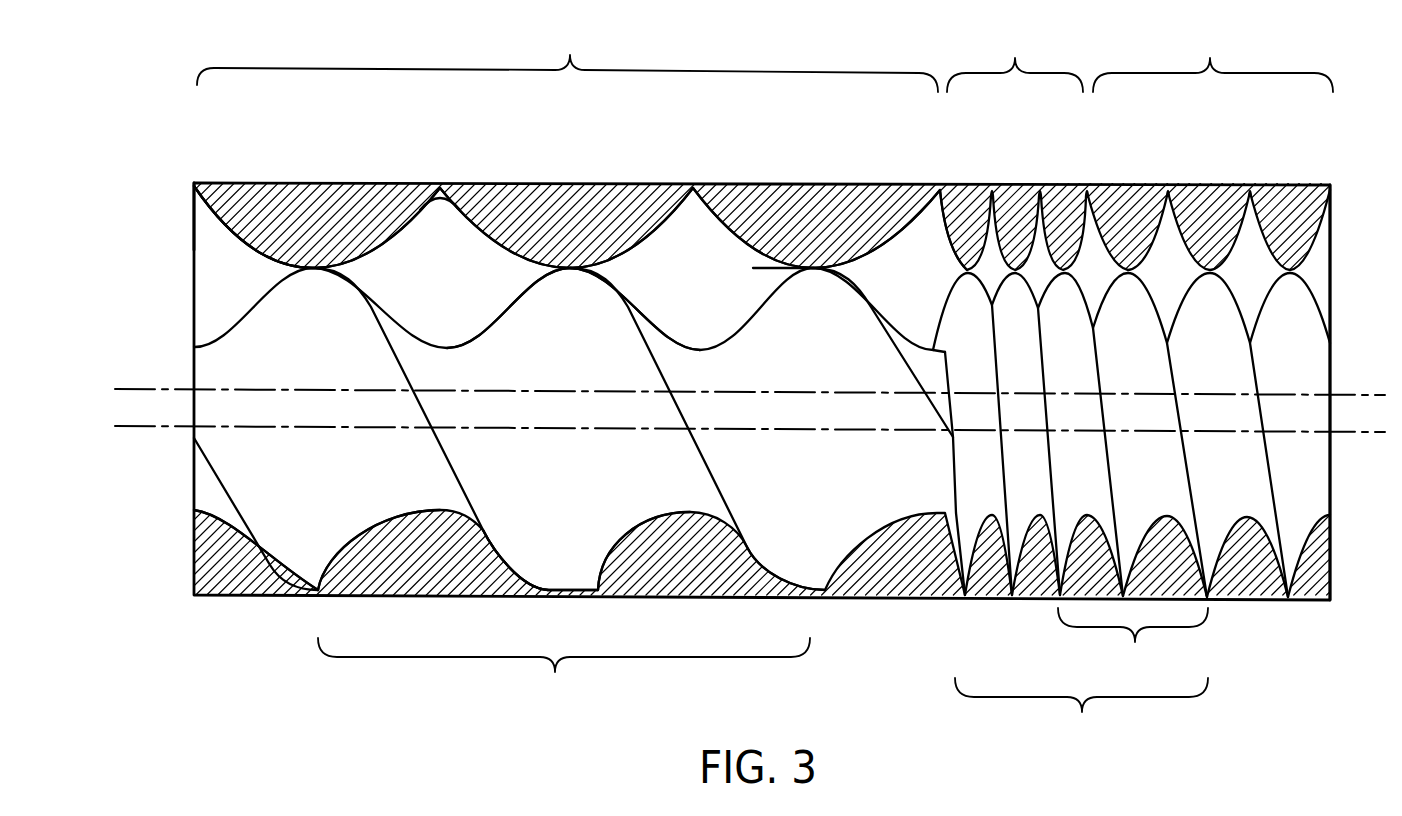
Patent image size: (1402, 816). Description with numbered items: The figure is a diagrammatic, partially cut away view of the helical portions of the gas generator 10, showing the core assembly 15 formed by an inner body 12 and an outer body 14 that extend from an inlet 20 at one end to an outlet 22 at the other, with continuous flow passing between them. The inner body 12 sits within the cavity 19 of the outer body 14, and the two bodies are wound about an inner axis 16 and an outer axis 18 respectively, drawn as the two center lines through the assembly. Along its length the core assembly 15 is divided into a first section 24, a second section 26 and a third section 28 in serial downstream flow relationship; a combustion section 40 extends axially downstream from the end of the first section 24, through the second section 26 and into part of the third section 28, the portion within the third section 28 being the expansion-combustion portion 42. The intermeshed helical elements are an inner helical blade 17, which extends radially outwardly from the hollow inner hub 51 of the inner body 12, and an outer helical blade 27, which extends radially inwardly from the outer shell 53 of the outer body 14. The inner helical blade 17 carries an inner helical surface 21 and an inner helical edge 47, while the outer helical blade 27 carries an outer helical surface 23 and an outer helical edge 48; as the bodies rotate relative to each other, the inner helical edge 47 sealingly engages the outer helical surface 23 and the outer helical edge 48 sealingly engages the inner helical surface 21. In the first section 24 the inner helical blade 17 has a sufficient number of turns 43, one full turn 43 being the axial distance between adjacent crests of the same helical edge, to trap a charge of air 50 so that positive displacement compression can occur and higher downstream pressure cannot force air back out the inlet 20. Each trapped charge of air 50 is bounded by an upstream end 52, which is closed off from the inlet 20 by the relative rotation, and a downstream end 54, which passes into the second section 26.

The gas generator 10 is at (107, 646).
The inner body 12 is at (200, 433).
The outer body 14 is at (300, 182).
The core assembly 15 is at (194, 234).
The inner axis 16 is at (1352, 434).
The inner helical blade 17 is at (583, 284).
The outer axis 18 is at (1380, 394).
The cavity 19 is at (441, 190).
The inlet 20 is at (194, 298).
The inner helical surface 21 is at (542, 548).
The outlet 22 is at (1333, 290).
The outer helical surface 23 is at (708, 228).
The first section 24 is at (567, 58).
The second section 26 is at (1030, 310).
The outer helical blade 27 is at (262, 192).
The third section 28 is at (1213, 311).
The combustion section 40 is at (1081, 711).
The expansion-combustion portion 42 is at (1133, 643).
The turn 43 is at (564, 671).
The inner helical edge 47 is at (450, 437).
The outer helical edge 48 is at (586, 540).
The charge of air 50 is at (503, 268).
The hollow inner hub 51 is at (200, 486).
The upstream end 52 is at (315, 597).
The outer shell 53 is at (194, 184).
The downstream end 54 is at (799, 253).